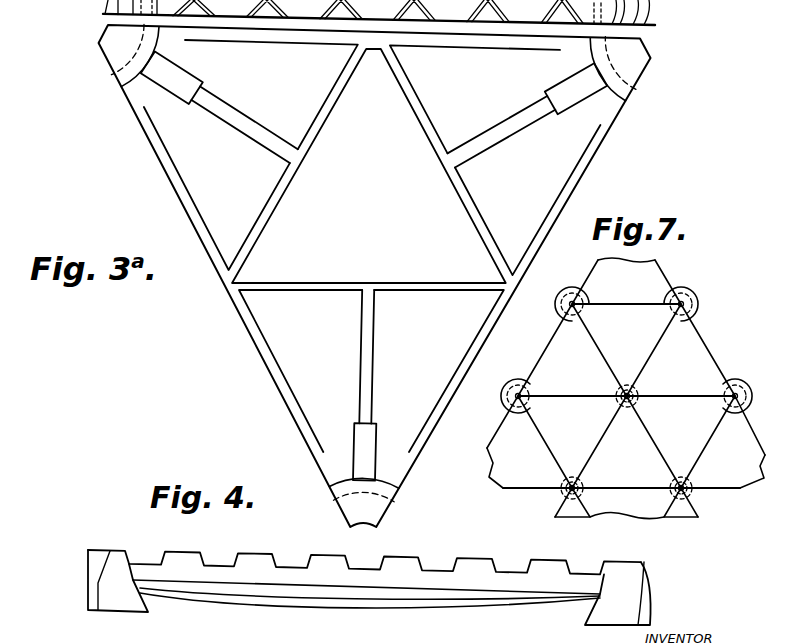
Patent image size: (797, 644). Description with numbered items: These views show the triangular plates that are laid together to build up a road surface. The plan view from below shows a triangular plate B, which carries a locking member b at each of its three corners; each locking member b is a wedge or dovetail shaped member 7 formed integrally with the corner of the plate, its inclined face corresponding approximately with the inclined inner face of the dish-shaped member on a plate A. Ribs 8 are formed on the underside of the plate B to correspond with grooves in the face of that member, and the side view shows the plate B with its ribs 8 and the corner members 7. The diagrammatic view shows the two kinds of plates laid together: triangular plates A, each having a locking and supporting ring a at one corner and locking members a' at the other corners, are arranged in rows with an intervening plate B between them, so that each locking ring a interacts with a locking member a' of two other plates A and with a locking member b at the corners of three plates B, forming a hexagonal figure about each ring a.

In FIG. 3A, the wedge or dovetail shaped member 7 is at (120, 55).
In FIG. 4, the wedge or dovetail shaped member 7 is at (122, 597).
In FIG. 3A, the ribs 8 is at (170, 80).
In FIG. 4, the ribs 8 is at (175, 590).
In FIG. 3A, the locking member b is at (669, 5).
In FIG. 7, the locking member b is at (638, 396).
In FIG. 4, the locking member b is at (107, 562).
In FIG. 3A, the triangular plate B is at (369, 166).
In FIG. 7, the triangular plate B is at (624, 383).
In FIG. 4, the triangular plate B is at (506, 580).
In FIG. 7, the triangular plate A is at (625, 411).
In FIG. 7, the locking and supporting ring a is at (626, 358).
In FIG. 7, the locking member a' is at (666, 390).